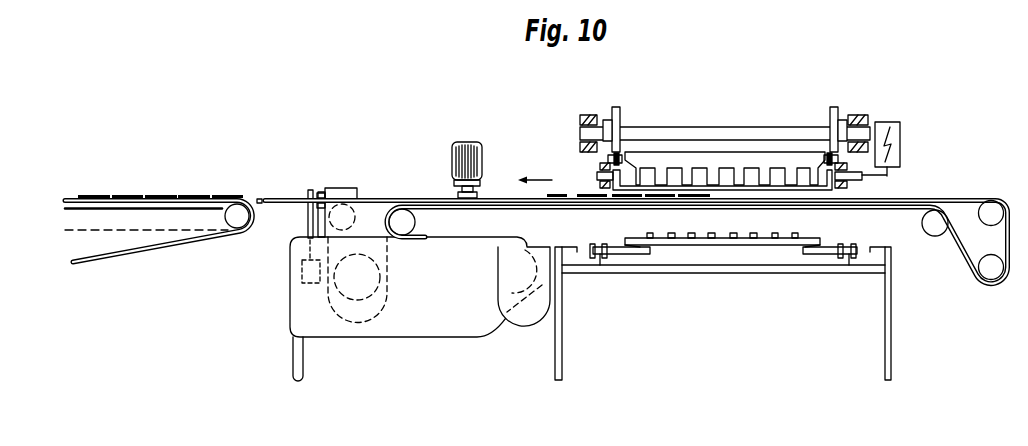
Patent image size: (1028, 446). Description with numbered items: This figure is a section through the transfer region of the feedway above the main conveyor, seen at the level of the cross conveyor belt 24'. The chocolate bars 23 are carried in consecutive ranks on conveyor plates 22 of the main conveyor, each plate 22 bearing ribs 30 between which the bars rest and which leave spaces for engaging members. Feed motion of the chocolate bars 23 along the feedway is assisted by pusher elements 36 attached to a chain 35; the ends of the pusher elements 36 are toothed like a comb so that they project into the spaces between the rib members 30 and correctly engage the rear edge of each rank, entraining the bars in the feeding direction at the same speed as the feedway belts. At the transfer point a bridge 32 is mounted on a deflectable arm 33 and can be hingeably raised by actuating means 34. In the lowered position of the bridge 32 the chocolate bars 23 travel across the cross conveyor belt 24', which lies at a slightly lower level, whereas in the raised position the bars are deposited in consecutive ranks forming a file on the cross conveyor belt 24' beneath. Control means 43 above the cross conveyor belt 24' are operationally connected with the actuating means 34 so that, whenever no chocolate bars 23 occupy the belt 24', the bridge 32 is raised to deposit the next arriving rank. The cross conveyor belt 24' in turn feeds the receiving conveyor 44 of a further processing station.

The conveyor plates 22 is at (642, 243).
The chocolate bars 23 is at (190, 195).
The cross conveyor belt 24' is at (636, 208).
The ribs 30 is at (713, 238).
The bridge 32 is at (792, 190).
The deflectable arm 33 is at (833, 190).
The actuating means 34 is at (893, 122).
The chain 35 is at (617, 155).
The pusher elements 36 is at (676, 157).
The control means 43 is at (457, 163).
The receiving conveyor 44 is at (157, 220).